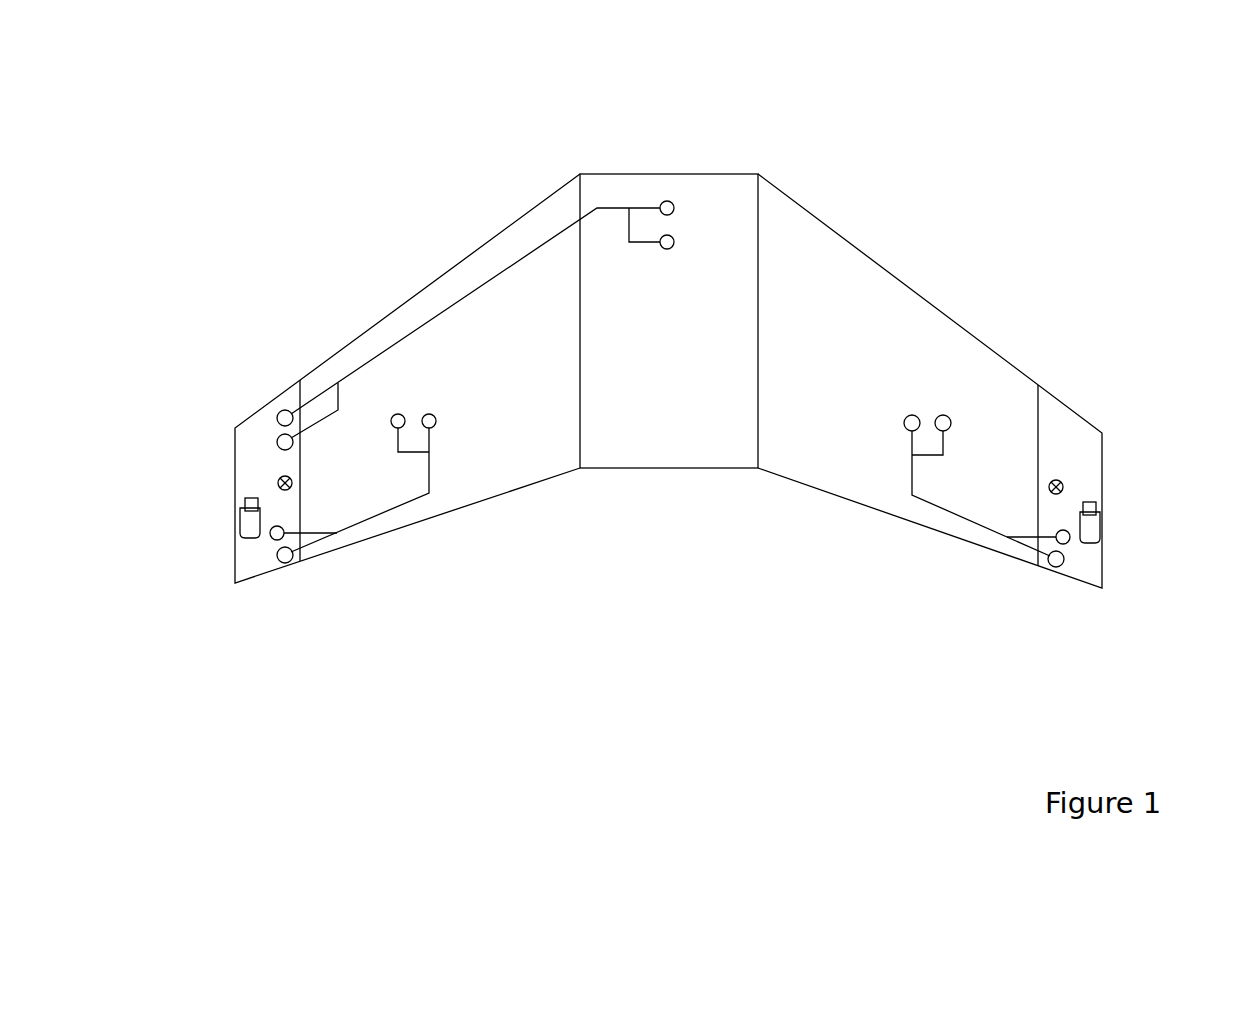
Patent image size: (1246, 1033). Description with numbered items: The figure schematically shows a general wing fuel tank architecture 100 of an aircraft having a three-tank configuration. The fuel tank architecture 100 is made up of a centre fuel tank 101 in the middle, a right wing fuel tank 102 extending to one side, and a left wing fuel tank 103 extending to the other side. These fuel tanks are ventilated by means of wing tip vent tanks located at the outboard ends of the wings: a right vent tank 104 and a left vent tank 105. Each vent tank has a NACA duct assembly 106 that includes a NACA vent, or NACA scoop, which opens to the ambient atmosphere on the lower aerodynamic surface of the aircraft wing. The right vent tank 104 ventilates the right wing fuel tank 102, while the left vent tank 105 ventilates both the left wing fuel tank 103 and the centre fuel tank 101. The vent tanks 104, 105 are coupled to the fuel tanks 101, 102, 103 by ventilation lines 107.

The wing fuel tank architecture 100 is at (671, 364).
The centre fuel tank 101 is at (710, 245).
The right wing fuel tank 102 is at (870, 342).
The left wing fuel tank 103 is at (517, 340).
The right vent tank 104 is at (1063, 460).
The left vent tank 105 is at (260, 455).
The NACA duct assembly 106 is at (248, 532).
The ventilation lines 107 is at (410, 328).